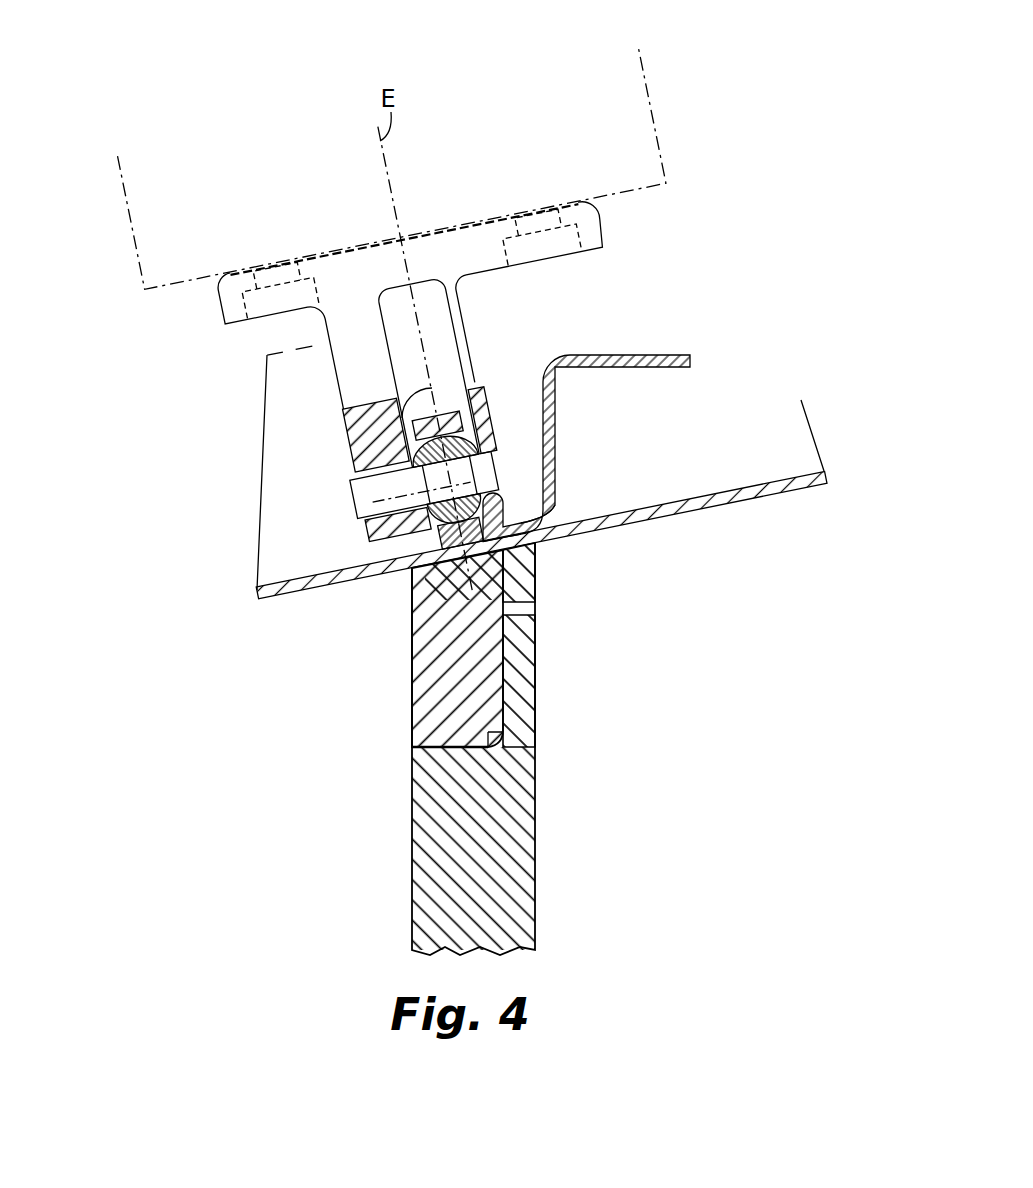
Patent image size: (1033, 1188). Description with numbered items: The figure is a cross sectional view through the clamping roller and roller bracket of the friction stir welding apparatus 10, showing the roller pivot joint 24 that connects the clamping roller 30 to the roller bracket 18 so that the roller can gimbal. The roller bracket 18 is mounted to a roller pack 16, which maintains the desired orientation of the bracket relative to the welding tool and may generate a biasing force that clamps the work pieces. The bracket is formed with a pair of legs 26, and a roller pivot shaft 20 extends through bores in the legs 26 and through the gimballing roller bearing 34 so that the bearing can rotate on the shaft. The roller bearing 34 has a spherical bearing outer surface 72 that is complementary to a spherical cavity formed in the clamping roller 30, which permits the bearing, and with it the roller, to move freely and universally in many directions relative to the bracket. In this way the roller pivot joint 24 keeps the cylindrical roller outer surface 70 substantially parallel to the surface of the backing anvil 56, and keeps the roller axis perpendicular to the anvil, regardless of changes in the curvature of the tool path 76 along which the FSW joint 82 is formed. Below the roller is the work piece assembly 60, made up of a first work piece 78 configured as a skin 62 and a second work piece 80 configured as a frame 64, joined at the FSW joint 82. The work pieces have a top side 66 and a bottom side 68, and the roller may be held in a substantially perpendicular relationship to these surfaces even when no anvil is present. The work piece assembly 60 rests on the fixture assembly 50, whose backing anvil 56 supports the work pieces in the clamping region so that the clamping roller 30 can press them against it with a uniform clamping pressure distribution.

The friction stir welding apparatus 10 is at (209, 70).
The roller pack 16 is at (645, 65).
The roller bracket 18 is at (470, 338).
The roller pivot shaft 20 is at (363, 497).
The roller pivot joint 24 is at (478, 422).
The legs 26 is at (458, 315).
The clamping roller 30 is at (397, 573).
The gimballing roller bearing 34 is at (533, 528).
The fixture assembly 50 is at (535, 778).
The backing anvil 56 is at (411, 695).
The work piece assembly 60 is at (207, 480).
The skin 62 is at (519, 560).
The frame 64 is at (586, 448).
The top side 66 is at (548, 492).
The bottom side 68 is at (518, 597).
The cylindrical roller outer surface 70 is at (393, 405).
The spherical bearing outer surface 72 is at (415, 535).
The tool path 76 is at (527, 557).
The first work piece 78 is at (257, 596).
The second work piece 80 is at (552, 444).
The FSW joint 82 is at (413, 617).